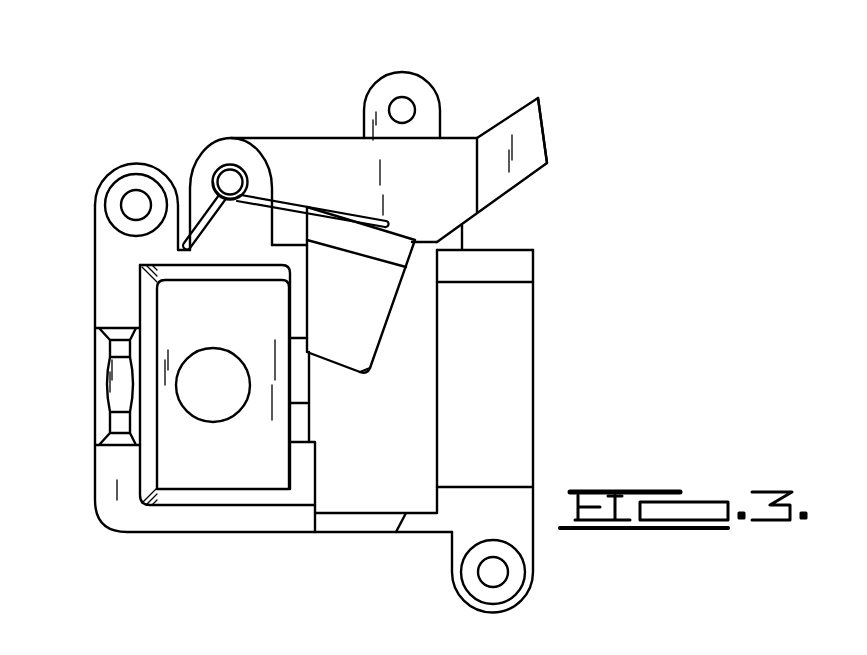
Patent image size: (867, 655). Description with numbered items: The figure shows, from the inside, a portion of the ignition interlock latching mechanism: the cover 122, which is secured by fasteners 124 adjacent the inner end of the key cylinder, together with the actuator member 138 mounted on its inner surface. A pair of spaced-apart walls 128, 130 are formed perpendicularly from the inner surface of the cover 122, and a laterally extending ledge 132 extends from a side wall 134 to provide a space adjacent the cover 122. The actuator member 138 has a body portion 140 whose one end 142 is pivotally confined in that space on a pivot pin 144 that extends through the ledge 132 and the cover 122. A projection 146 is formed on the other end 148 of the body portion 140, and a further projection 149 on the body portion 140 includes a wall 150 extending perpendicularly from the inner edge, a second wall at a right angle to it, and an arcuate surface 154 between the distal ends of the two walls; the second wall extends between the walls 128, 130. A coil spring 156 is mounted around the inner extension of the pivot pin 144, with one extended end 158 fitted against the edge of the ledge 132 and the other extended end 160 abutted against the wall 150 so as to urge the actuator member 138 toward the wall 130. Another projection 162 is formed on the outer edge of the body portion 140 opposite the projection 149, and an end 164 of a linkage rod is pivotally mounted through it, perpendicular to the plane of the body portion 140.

The cover 122 is at (215, 470).
The fasteners 124 is at (121, 205).
The wall 128 is at (437, 418).
The wall 130 is at (312, 402).
The ledge 132 is at (228, 139).
The side wall 134 is at (184, 273).
The actuator member 138 is at (348, 133).
The body portion 140 is at (313, 138).
The one end 142 is at (196, 150).
The pivot pin 144 is at (247, 180).
The projection 146 is at (547, 165).
The other end 148 is at (542, 124).
The further projection 149 is at (378, 295).
The wall 150 is at (402, 234).
The arcuate surface 154 is at (380, 337).
The coil spring 156 is at (214, 178).
The extended end 158 is at (212, 222).
The other extended end 160 is at (298, 207).
The projection 162 is at (416, 74).
The end of linkage rod 164 is at (414, 106).